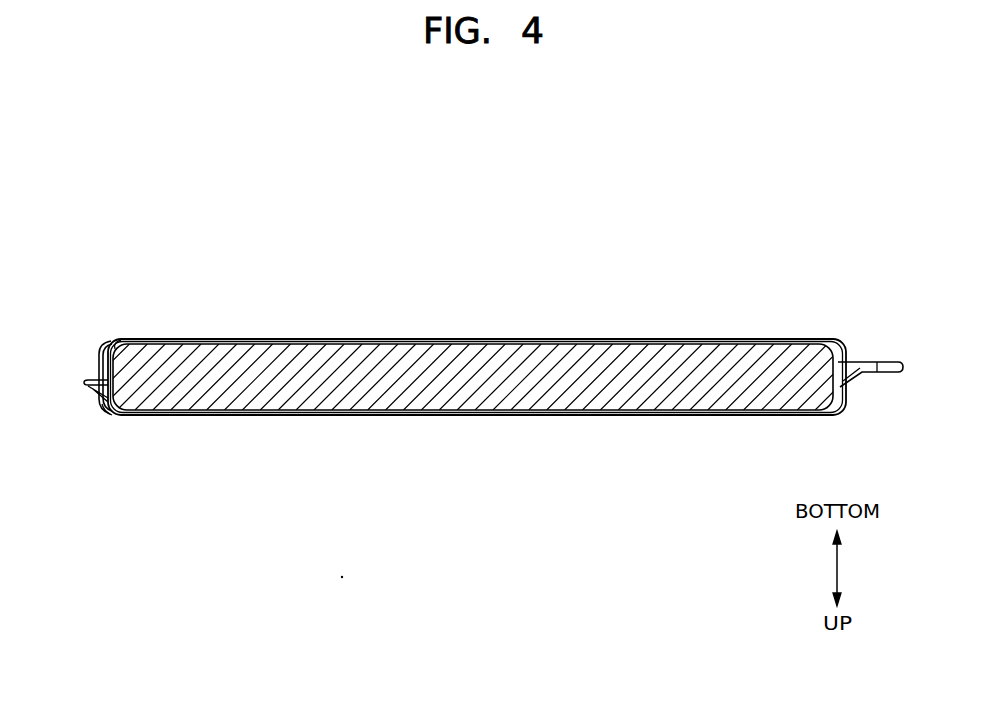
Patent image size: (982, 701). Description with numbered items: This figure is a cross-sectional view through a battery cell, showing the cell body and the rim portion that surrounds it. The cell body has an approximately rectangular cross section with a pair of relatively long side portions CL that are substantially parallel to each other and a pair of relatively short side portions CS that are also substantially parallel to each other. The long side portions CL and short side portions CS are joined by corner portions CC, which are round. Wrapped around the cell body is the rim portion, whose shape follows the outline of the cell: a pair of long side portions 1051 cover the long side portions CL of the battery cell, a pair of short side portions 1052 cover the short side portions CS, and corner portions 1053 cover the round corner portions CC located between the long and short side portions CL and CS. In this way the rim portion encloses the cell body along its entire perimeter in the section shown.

The long side portions 1051 is at (414, 413).
The short side portions 1052 is at (100, 366).
The corner portions 1053 is at (110, 413).
The corner portions CC is at (119, 339).
The short side portions CS is at (108, 368).
The long side portions CL is at (422, 342).